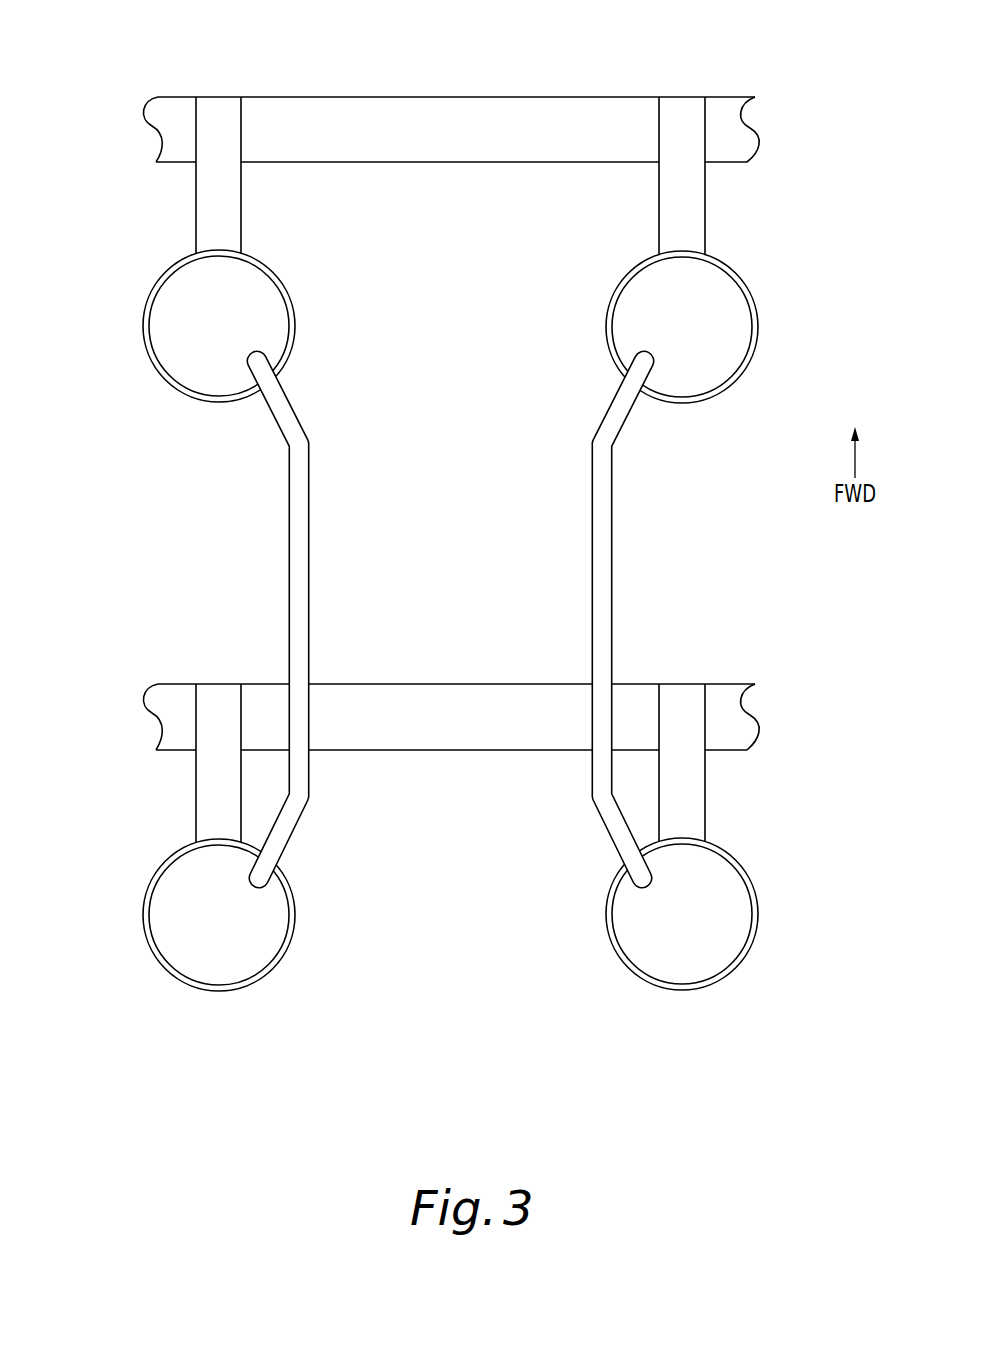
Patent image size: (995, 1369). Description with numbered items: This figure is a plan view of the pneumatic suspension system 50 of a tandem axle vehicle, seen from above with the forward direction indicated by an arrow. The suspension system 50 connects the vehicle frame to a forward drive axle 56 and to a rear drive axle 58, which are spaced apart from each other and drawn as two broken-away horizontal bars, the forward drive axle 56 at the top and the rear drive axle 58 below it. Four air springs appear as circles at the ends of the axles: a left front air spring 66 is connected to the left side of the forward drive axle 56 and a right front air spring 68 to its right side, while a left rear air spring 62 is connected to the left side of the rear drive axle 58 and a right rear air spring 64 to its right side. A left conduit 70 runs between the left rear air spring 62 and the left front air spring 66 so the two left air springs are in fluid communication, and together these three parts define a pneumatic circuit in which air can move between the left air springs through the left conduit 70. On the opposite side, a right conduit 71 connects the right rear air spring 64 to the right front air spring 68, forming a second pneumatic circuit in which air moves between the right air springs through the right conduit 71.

The pneumatic suspension system 50 is at (474, 514).
The forward drive axle 56 is at (723, 108).
The rear drive axle 58 is at (723, 695).
The left rear air spring 62 is at (178, 902).
The right rear air spring 64 is at (757, 876).
The left front air spring 66 is at (143, 316).
The right front air spring 68 is at (757, 303).
The left conduit 70 is at (310, 500).
The right conduit 71 is at (590, 470).